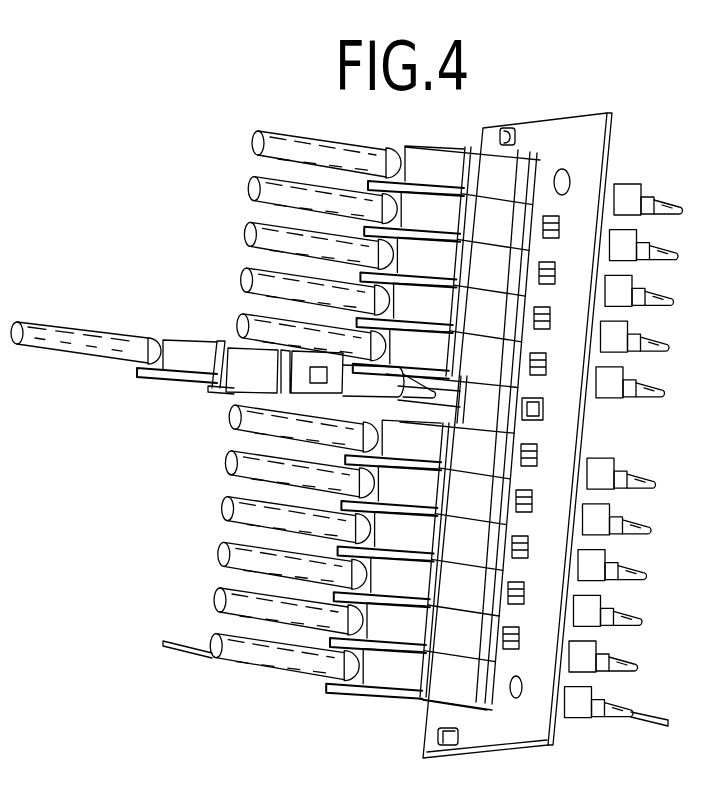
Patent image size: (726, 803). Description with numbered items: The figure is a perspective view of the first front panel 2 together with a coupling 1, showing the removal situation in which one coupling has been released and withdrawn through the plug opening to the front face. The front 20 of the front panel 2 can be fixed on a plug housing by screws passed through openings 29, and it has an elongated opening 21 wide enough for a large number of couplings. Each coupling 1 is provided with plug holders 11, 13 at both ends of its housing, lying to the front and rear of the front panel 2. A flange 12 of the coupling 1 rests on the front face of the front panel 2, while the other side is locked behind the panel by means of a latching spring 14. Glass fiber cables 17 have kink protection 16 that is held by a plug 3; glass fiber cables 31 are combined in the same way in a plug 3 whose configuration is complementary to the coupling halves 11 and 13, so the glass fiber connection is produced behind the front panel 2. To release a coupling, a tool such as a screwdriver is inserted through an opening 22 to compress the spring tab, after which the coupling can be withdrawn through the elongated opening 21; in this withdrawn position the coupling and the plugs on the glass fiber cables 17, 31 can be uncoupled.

The coupling 1 is at (232, 310).
The front panel 2 is at (630, 126).
The plug 3 is at (625, 298).
The plug holder 11 is at (440, 678).
The flange 12 is at (480, 683).
The plug holder 13 is at (330, 393).
The latching spring 14 is at (312, 372).
The kink protection 16 is at (278, 665).
The glass fiber cables 17 is at (180, 643).
The front 20 is at (546, 138).
The elongated opening 21 is at (483, 418).
The opening 22 is at (538, 398).
The openings 29 is at (568, 184).
The glass fiber cables 31 is at (652, 712).